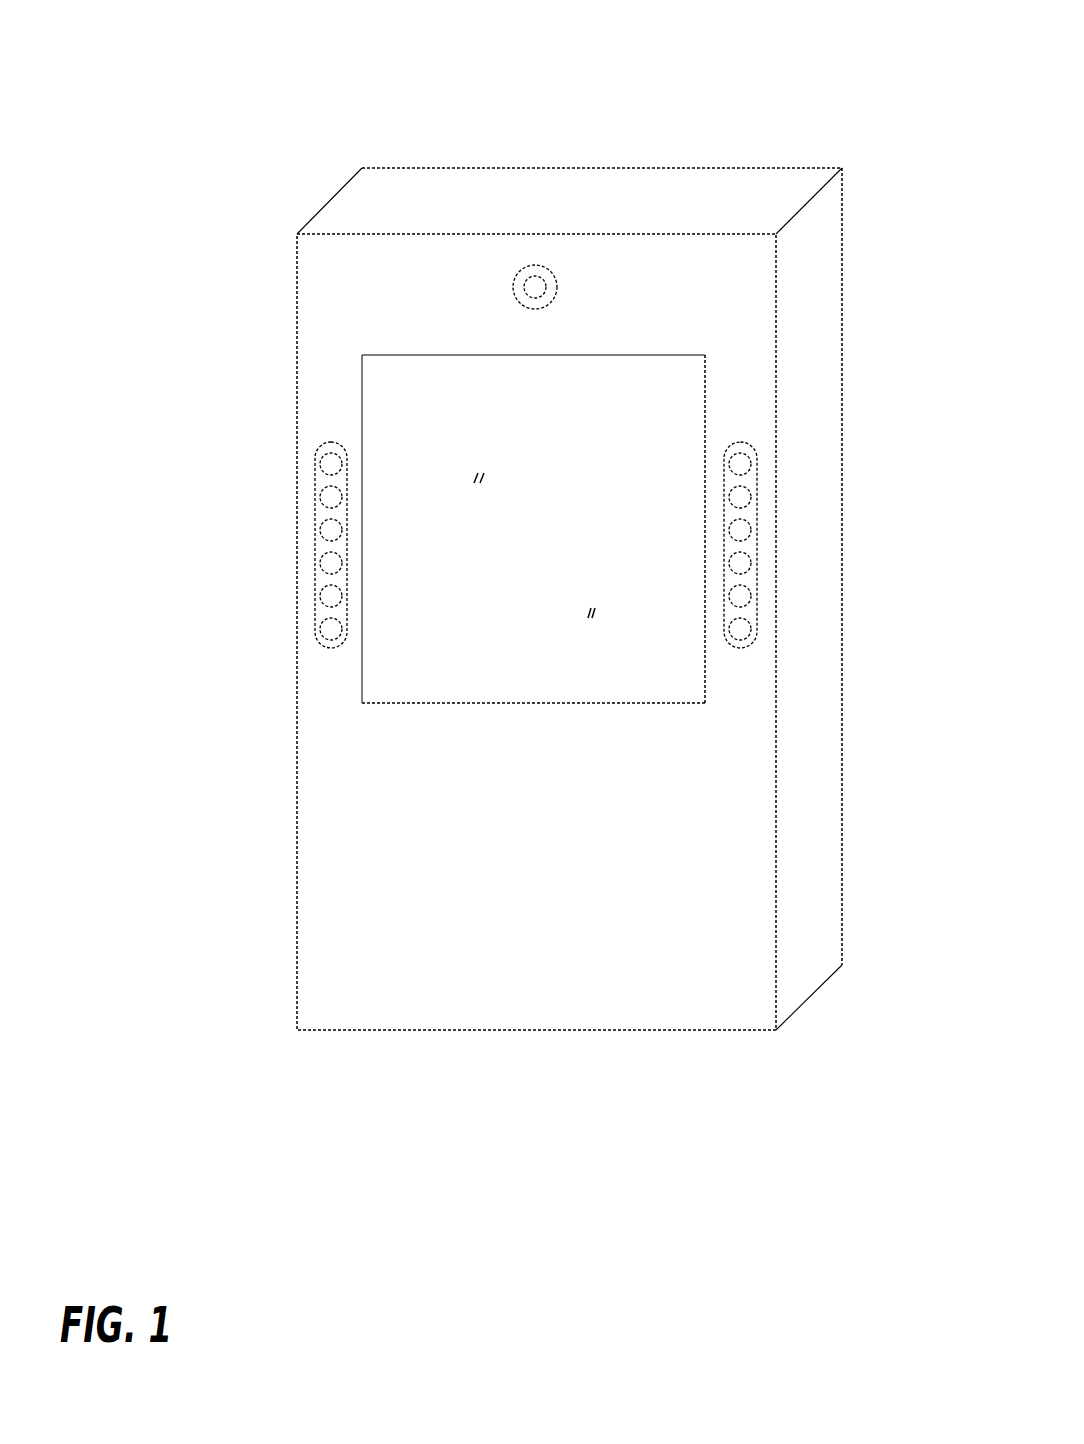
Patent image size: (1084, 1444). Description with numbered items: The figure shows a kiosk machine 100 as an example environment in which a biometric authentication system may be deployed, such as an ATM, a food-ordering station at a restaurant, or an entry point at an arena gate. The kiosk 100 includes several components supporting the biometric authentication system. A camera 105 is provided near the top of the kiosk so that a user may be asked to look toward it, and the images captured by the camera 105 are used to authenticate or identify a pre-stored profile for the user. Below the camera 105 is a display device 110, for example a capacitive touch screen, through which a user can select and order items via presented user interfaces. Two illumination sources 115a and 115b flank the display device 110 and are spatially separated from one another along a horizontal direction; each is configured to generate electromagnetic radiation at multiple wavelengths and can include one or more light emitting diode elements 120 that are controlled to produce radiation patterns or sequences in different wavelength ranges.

The kiosk machine 100 is at (556, 519).
The camera 105 is at (535, 287).
The display device 110 is at (623, 387).
The illumination source 115a is at (325, 480).
The illumination source 115b is at (837, 520).
The light emitting diode (LED) element 120 is at (740, 588).